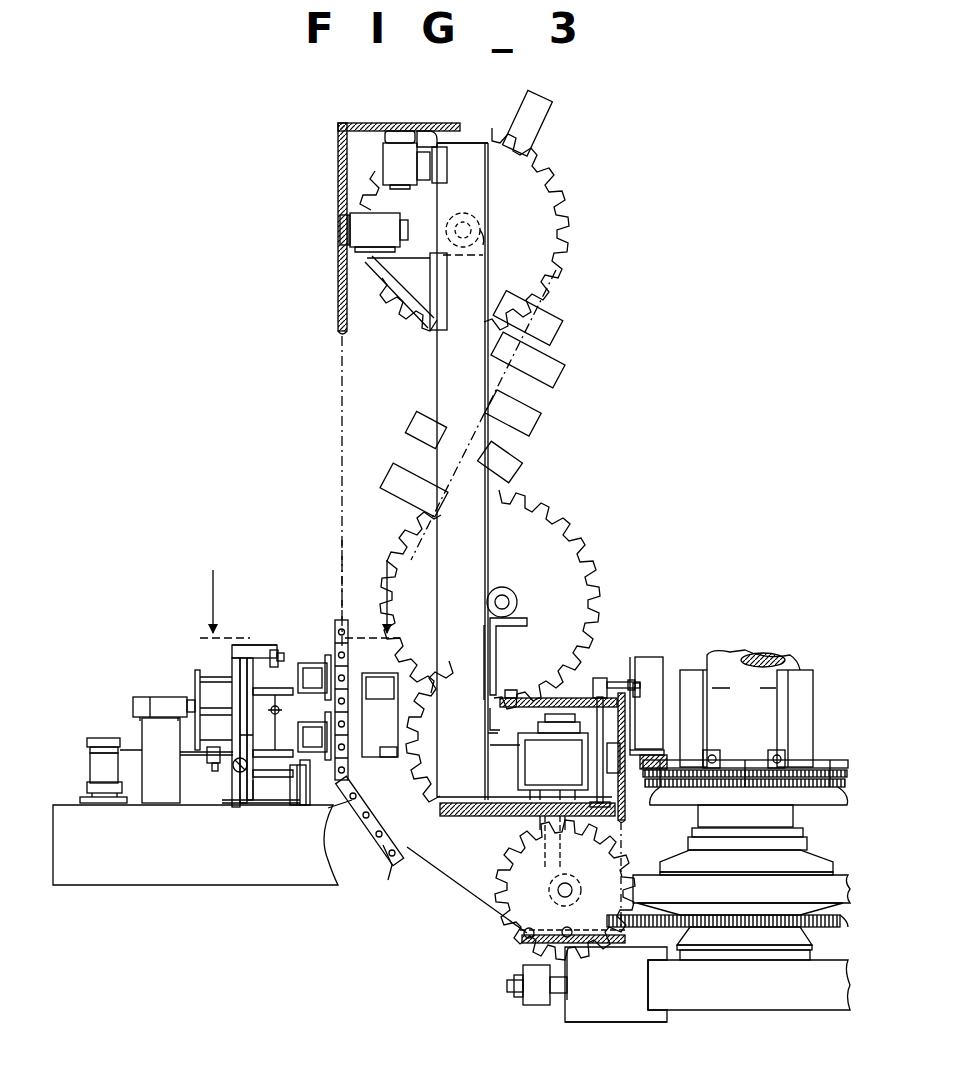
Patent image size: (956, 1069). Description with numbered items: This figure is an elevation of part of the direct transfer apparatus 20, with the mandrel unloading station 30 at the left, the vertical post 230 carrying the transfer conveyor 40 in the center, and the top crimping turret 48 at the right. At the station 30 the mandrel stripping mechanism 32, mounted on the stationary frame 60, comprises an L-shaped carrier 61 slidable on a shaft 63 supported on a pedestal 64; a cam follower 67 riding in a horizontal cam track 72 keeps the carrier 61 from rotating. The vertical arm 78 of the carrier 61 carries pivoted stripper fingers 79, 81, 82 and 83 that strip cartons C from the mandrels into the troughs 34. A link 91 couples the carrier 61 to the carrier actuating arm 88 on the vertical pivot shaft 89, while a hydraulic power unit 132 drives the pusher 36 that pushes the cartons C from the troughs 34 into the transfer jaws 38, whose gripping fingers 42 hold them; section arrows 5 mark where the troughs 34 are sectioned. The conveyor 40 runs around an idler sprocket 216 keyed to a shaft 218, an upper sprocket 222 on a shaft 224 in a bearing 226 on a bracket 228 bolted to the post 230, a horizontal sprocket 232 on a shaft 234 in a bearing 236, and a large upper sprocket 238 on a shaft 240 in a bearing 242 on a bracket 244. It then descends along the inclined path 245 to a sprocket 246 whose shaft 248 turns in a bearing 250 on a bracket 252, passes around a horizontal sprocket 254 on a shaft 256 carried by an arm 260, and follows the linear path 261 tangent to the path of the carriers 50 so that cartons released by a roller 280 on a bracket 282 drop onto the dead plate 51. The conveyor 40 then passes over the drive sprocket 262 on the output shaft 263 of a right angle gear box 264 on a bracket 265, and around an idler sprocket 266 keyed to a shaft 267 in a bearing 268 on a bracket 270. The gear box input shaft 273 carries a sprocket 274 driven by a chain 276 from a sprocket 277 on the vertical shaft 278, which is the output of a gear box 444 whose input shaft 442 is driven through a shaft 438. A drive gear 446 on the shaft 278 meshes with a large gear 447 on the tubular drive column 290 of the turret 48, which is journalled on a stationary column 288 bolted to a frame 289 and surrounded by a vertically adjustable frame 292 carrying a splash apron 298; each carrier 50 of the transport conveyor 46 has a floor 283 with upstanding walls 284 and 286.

The direct transfer apparatus 20 is at (250, 175).
The mandrel unloading station 30 is at (278, 625).
The mandrel stripping mechanism 32 is at (258, 640).
The troughs 34 is at (232, 663).
The power actuated pusher 36 is at (190, 685).
The transfer jaws 38 is at (350, 660).
The transfer conveyor 40 is at (342, 625).
The carton gripping fingers 42 is at (345, 845).
The transport conveyor 46 is at (832, 766).
The top crimping turret 48 is at (762, 650).
The carriers 50 is at (705, 767).
The dead plate 51 is at (690, 760).
The stationary frame 60 is at (58, 805).
The mandrel unloading carrier 61 is at (252, 790).
The shaft 63 is at (230, 772).
The pedestal 64 is at (247, 776).
The cam follower 67 is at (290, 785).
The cam track 72 is at (305, 785).
The vertical arm 78 is at (232, 650).
The stripper finger 79 is at (276, 655).
The stripper finger 81 is at (272, 708).
The stripper finger 82 is at (280, 712).
The stripper finger 83 is at (238, 738).
The carrier actuating arm 88 is at (90, 760).
The vertical pivot shaft 89 is at (100, 740).
The link 91 is at (195, 770).
The hydraulic power unit 132 is at (133, 705).
The idler sprocket 216 is at (420, 718).
The shaft 218 is at (422, 786).
The upper sprocket 222 is at (340, 268).
The shaft 224 is at (348, 228).
The bearing 226 is at (372, 214).
The bracket 228 is at (410, 312).
The vertical post 230 is at (440, 378).
The sprocket 232 is at (352, 122).
The shaft 234 is at (385, 140).
The bearing 236 is at (390, 160).
The large diameter upper sprocket 238 is at (530, 196).
The shaft 240 is at (482, 220).
The bearing 242 is at (483, 248).
The bracket 244 is at (490, 286).
The inclined path 245 is at (537, 333).
The sprocket 246 is at (522, 500).
The shaft 248 is at (500, 588).
The bearing 250 is at (514, 612).
The bracket 252 is at (497, 650).
The horizontal sprocket 254 is at (512, 697).
The shaft 256 is at (548, 712).
The arm 260 is at (497, 733).
The linear path 261 is at (630, 680).
The drive sprocket 262 is at (623, 812).
The output shaft 263 is at (600, 758).
The right angle gear box 264 is at (553, 781).
The bracket 265 is at (461, 810).
The idler sprocket 266 is at (621, 840).
The shaft 267 is at (560, 890).
The bearing 268 is at (527, 938).
The bracket 270 is at (532, 842).
The input shaft 273 is at (537, 824).
The sprocket 274 is at (458, 880).
The drive chain 276 is at (622, 950).
The sprocket 277 is at (602, 980).
The vertical shaft 278 is at (638, 947).
The roller 280 is at (612, 690).
The bracket 282 is at (600, 731).
The carton supporting floor 283 is at (668, 772).
The wall 284 is at (795, 775).
The wall 286 is at (735, 772).
The stationary vertical column 288 is at (800, 948).
The stationary frame 289 is at (767, 996).
The tubular drive column 290 is at (775, 658).
The vertically adjustable frame 292 is at (838, 905).
The splash apron 298 is at (790, 831).
The shaft 438 is at (512, 998).
The input shaft 442 is at (565, 990).
The gear box 444 is at (663, 1018).
The drive gear 446 is at (638, 912).
The large diameter gear 447 is at (802, 950).
The section line 5 is at (278, 613).
The carton C is at (558, 712).